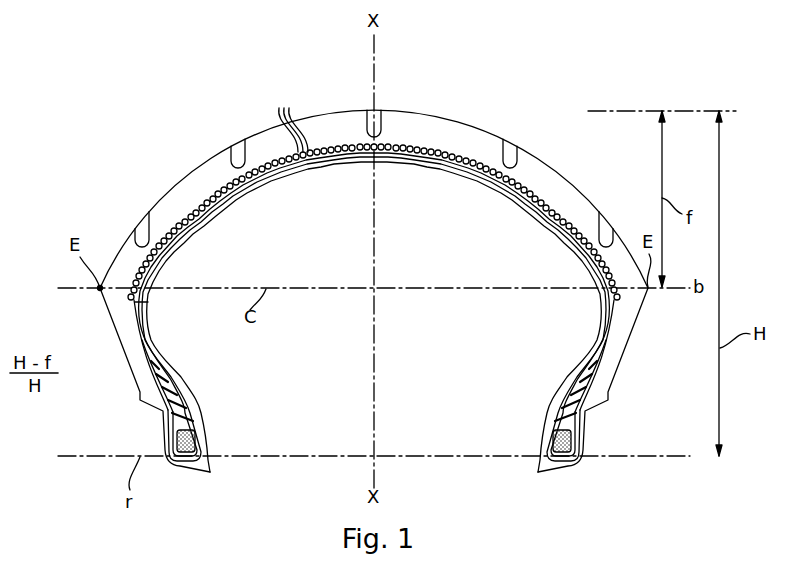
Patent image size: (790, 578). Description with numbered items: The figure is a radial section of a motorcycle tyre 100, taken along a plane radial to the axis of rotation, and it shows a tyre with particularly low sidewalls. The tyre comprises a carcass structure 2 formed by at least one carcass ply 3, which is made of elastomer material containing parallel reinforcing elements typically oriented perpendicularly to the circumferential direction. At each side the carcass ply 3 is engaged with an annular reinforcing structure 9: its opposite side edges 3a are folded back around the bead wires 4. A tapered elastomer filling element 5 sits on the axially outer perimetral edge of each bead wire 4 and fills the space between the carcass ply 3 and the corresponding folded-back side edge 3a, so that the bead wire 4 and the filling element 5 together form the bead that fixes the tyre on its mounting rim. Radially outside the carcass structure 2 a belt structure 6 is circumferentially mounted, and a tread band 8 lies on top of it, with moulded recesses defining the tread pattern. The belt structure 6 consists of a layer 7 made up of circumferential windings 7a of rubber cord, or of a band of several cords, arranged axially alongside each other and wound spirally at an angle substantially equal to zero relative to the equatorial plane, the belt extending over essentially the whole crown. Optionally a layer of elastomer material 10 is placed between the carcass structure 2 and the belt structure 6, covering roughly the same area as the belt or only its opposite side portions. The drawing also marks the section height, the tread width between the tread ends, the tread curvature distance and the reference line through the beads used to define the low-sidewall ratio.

The motorcycle tyre 100 is at (518, 93).
The carcass structure 2 is at (627, 332).
The carcass ply 3 is at (535, 210).
The side edges of the carcass ply 3a is at (582, 412).
The bead wire 4 is at (562, 448).
The tapered elastomer filling element 5 is at (567, 398).
The belt structure 6 is at (128, 303).
The layer 7 is at (292, 118).
The circumferential windings 7a is at (405, 146).
The tread band 8 is at (535, 172).
The annular reinforcing structure 9 is at (573, 380).
The layer of elastomer material 10 is at (153, 279).